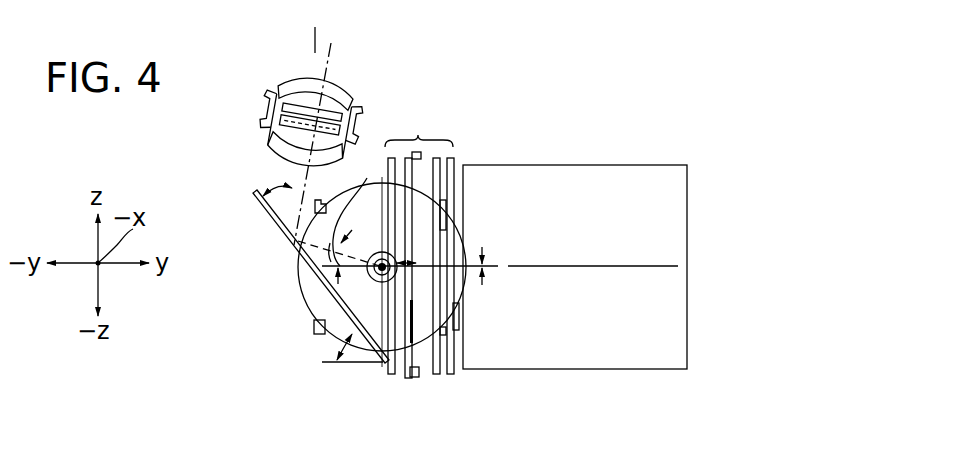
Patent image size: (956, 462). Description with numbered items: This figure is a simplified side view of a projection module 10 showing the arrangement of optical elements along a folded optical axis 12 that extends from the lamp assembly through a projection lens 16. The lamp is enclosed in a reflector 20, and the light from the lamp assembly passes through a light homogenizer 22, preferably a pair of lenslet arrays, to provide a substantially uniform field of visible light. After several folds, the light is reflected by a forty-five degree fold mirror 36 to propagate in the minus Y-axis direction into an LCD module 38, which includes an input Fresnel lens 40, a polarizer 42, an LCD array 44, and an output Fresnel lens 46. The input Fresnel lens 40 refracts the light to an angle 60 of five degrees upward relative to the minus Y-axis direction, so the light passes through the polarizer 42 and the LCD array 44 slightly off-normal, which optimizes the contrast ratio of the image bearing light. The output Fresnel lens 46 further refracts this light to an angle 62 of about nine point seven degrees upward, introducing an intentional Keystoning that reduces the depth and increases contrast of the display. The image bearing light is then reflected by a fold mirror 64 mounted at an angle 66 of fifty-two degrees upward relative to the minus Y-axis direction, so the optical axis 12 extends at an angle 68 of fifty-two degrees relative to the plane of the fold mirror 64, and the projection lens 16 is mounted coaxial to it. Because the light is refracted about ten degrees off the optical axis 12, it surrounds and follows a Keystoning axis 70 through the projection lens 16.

The projection module 10 is at (630, 91).
The folded optical axis 12 is at (334, 68).
The projection lens 16 is at (345, 104).
The reflector 20 is at (318, 292).
The light homogenizer 22 is at (318, 333).
The fold mirror 36 is at (675, 203).
The LCD module 38 is at (418, 135).
The input Fresnel lens 40 is at (451, 375).
The polarizer 42 is at (438, 376).
The LCD array 44 is at (413, 378).
The output Fresnel lens 46 is at (392, 374).
The angle 60 is at (462, 225).
The angle 62 is at (357, 210).
The fold mirror 64 is at (292, 258).
The angle 66 is at (333, 347).
The angle 68 is at (270, 186).
The Keystoning axis 70 is at (315, 52).